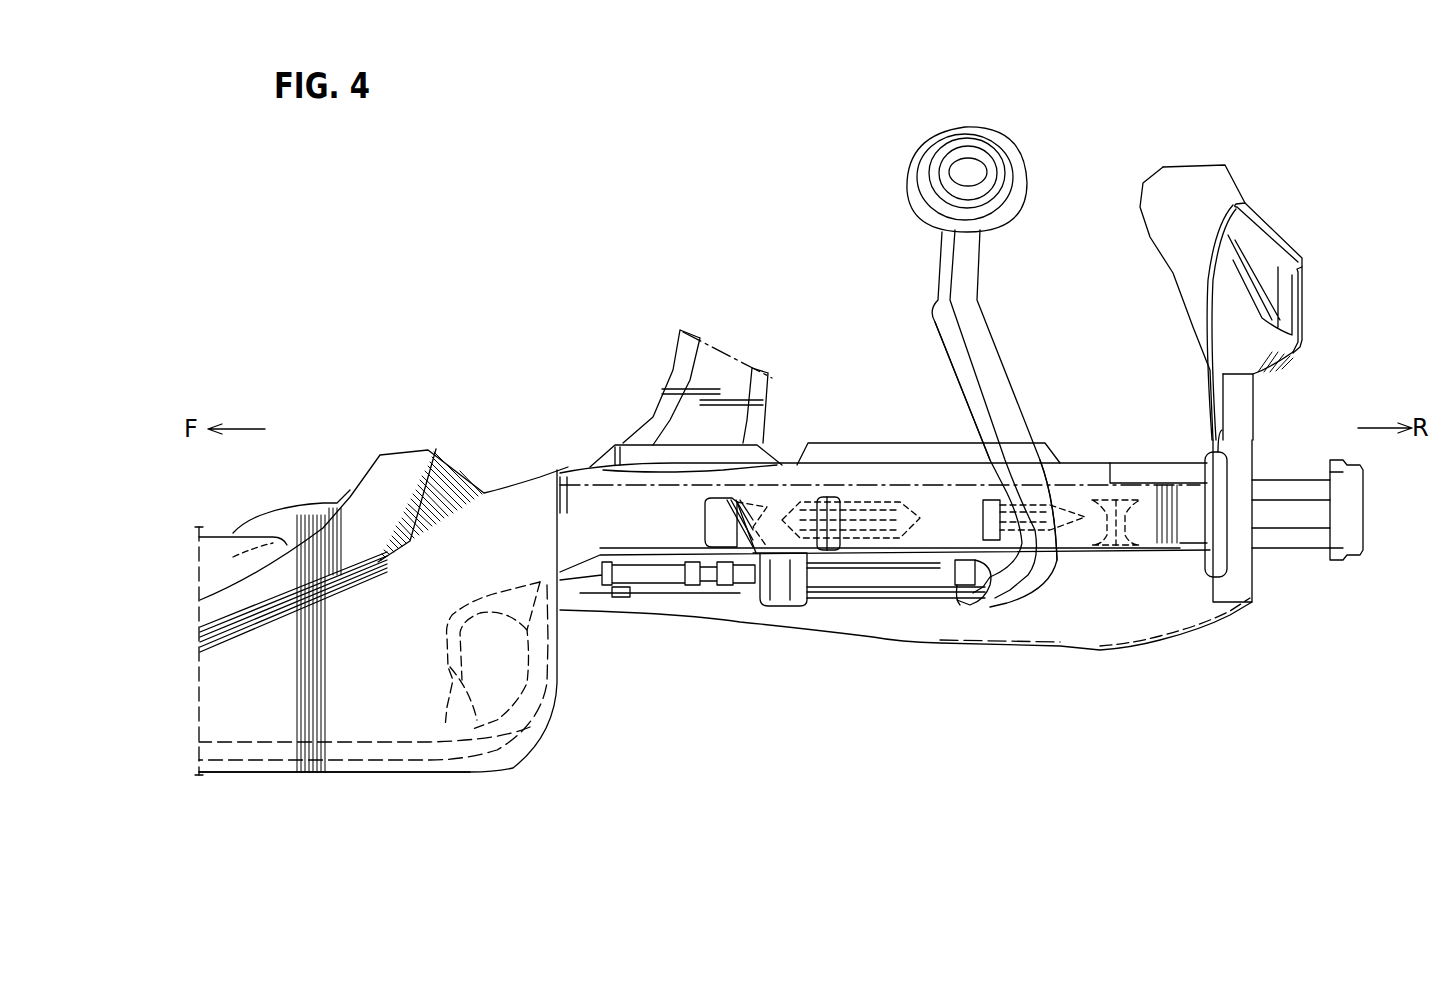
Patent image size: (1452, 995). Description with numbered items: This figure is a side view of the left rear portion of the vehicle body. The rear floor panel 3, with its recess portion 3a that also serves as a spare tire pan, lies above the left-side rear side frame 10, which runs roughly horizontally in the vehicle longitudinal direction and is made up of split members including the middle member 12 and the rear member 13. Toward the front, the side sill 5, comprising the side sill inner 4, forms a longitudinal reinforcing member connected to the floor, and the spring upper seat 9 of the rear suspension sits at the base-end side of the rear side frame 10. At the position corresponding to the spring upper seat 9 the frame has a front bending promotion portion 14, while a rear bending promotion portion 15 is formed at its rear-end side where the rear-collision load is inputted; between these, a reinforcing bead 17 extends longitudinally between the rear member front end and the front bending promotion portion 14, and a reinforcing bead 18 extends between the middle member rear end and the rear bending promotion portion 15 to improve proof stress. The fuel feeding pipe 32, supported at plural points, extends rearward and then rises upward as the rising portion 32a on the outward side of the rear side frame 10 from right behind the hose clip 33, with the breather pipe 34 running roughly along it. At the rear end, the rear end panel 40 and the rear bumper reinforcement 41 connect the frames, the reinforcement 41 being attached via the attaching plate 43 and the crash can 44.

The rear floor panel 3 is at (1110, 655).
The recess portion 3a is at (1022, 640).
The side sill inner 4 is at (371, 676).
The side sill 5 is at (446, 783).
The spring upper seat 9 is at (754, 568).
The rear side frame 10 is at (1100, 438).
The middle member 12 is at (817, 443).
The rear member 13 is at (1180, 550).
The front bending promotion portion 14 is at (742, 503).
The rear bending promotion portion 15 is at (1130, 495).
The reinforcing bead 17 is at (865, 540).
The reinforcing bead 18 is at (1062, 535).
The fuel feeding pipe 32 is at (1018, 348).
The rising portion 32a is at (1033, 433).
The hose clip 33 is at (977, 587).
The breather pipe 34 is at (943, 352).
The rear end panel 40 is at (1213, 327).
The rear bumper reinforcement 41 is at (1363, 503).
The attaching plate 43 is at (1250, 457).
The crash can 44 is at (1288, 550).